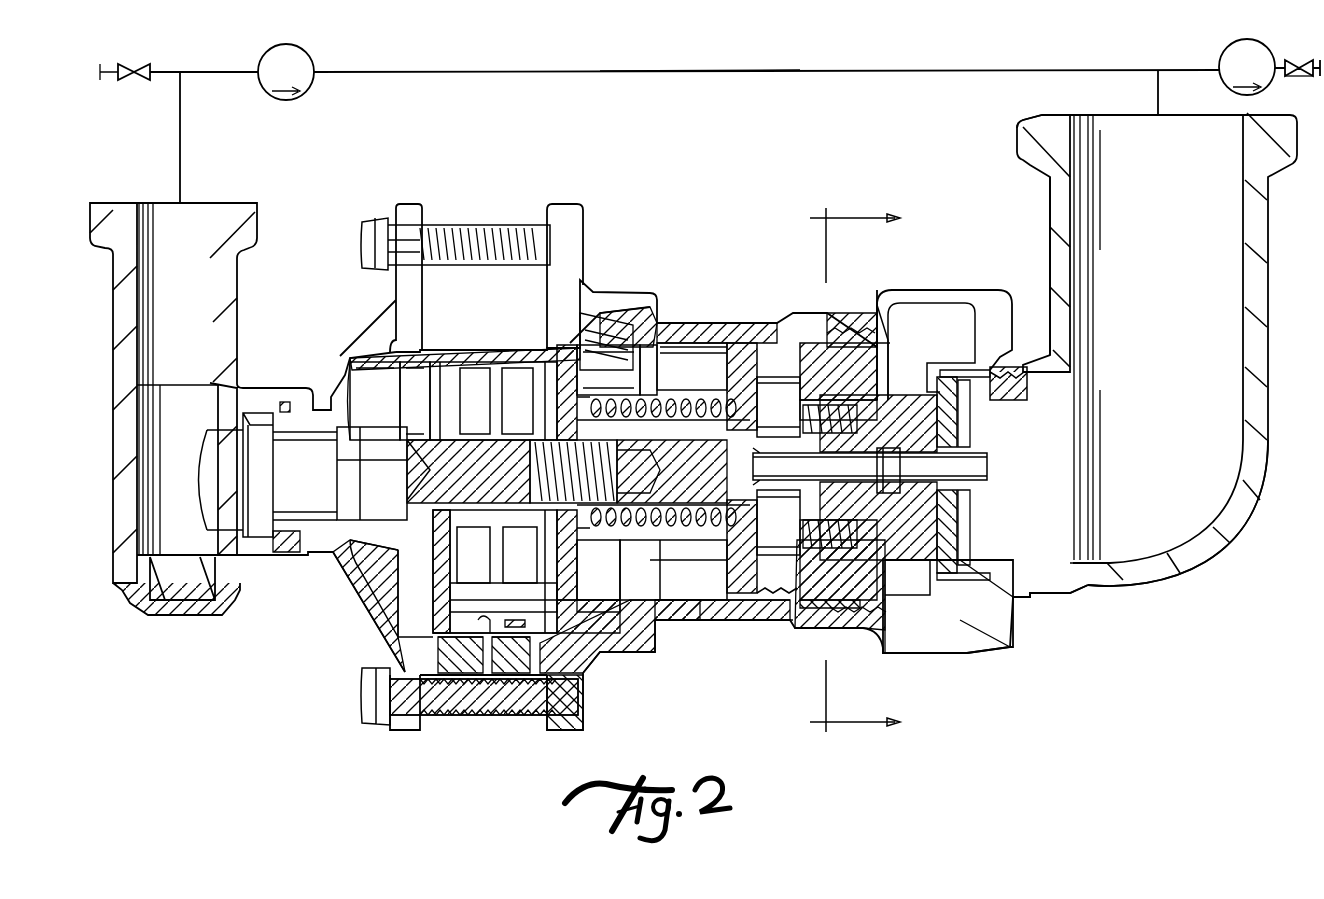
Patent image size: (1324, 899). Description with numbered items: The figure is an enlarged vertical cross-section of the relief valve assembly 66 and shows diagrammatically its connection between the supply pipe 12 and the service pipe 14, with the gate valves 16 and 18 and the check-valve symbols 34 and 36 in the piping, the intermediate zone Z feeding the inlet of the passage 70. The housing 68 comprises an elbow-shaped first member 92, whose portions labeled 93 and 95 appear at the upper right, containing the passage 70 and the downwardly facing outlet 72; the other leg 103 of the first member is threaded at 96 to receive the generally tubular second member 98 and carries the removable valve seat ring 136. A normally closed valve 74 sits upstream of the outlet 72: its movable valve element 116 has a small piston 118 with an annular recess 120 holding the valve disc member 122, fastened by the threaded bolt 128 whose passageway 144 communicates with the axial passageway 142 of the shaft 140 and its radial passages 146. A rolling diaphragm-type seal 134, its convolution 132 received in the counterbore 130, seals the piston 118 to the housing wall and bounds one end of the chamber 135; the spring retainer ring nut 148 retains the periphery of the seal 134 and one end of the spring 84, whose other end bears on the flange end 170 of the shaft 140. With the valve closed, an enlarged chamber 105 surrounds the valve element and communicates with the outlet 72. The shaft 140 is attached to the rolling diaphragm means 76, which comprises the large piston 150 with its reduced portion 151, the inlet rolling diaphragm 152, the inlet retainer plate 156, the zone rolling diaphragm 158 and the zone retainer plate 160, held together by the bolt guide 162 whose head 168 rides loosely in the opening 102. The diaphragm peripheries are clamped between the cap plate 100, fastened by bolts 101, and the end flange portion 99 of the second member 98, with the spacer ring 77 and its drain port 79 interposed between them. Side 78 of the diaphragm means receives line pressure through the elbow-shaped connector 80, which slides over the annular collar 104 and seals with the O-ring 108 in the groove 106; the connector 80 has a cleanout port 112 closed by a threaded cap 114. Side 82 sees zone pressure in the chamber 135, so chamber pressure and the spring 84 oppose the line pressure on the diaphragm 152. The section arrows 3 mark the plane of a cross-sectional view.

The supply pipe 12 is at (104, 70).
The gate valve 16 is at (140, 70).
The check valve 34 is at (308, 62).
The zone Z is at (710, 72).
The check valve 36 is at (1228, 55).
The service pipe 14 is at (1299, 65).
The gate valve 18 is at (1302, 78).
The connector 80 is at (239, 288).
The cleanout port 112 is at (215, 568).
The threaded cap 114 is at (230, 612).
The annular collar 104 is at (335, 450).
The opening 102 is at (352, 462).
The annular groove 106 is at (284, 400).
The O-ring seal 108 is at (288, 555).
The cap plate 100 is at (370, 613).
The tubular second member 98 is at (718, 622).
The rolling diaphragm-type seal 134 is at (775, 630).
The housing 68 is at (805, 632).
The interiorly threaded end 96 is at (850, 633).
The outlet 72 is at (912, 655).
The leg 103 is at (1025, 600).
The bolts 101 is at (360, 224).
The spacer ring 77 is at (455, 716).
The end flange portion 99 is at (588, 672).
The rolling diaphragm means 76 is at (440, 625).
The drain port 79 is at (481, 618).
The large piston 150 is at (520, 618).
The head 168 is at (395, 405).
The bolt guide 162 is at (427, 420).
The flange end 170 is at (577, 395).
The spring retainer ring nut 148 is at (645, 370).
The chamber 135 is at (676, 398).
The spring 84 is at (606, 412).
The relief valve assembly 66 is at (736, 313).
The zone retainer plate 160 is at (578, 553).
The zone rolling diaphragm 158 is at (578, 568).
The other side 82 is at (577, 582).
The reduced portion 151 is at (575, 625).
The shaft 140 is at (662, 542).
The inlet retainer plate 156 is at (420, 555).
The one side 78 is at (433, 572).
The inlet rolling diaphragm 152 is at (450, 590).
The radially extending passages 146 is at (775, 440).
The axially extending passageway 142 is at (773, 555).
The convolution 132 is at (820, 378).
The counterbore 130 is at (860, 378).
The threaded bolt 128 is at (975, 458).
The passageway 144 is at (968, 492).
The valve disc member 122 is at (972, 418).
The annular recess 120 is at (972, 540).
The small piston 118 is at (900, 562).
The valve 74 is at (961, 345).
The enlarged chamber 105 is at (940, 343).
The movable valve element 116 is at (882, 315).
The valve seat ring 136 is at (1000, 372).
The passage 70 is at (1157, 349).
The housing flange 95 is at (1015, 135).
The housing wall 93 is at (1048, 212).
The first member 92 is at (1215, 565).
The section line 3- 3 is at (843, 470).